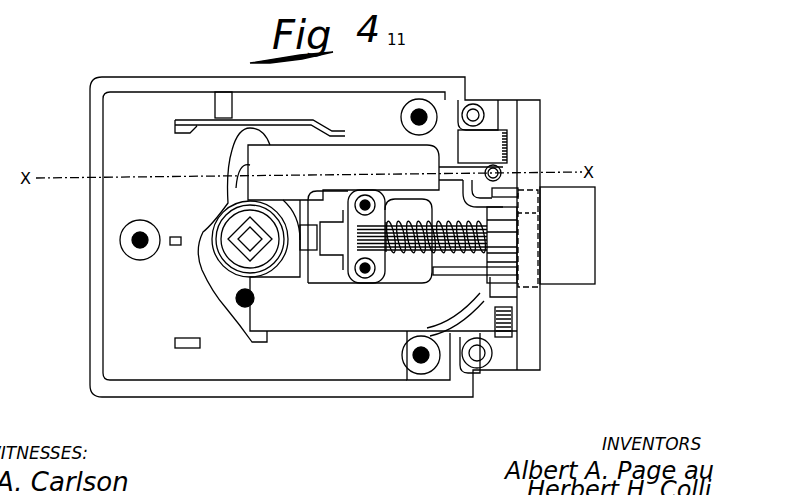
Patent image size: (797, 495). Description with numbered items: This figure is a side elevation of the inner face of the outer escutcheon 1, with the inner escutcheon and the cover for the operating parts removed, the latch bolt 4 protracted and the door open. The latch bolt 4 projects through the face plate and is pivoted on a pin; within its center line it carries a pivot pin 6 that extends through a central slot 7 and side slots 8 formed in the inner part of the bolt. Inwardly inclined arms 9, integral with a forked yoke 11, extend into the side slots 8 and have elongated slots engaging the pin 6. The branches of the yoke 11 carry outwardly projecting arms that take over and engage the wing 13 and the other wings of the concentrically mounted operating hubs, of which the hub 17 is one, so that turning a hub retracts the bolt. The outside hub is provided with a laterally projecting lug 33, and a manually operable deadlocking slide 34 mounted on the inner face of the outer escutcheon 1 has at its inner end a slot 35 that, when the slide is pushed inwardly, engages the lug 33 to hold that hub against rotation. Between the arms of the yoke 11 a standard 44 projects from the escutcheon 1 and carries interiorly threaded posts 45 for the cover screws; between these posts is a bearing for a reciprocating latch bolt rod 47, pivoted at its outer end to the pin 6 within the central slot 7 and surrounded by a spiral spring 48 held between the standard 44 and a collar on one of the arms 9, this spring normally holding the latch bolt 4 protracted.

The outer escutcheon 1 is at (156, 102).
The latch bolt 4 is at (582, 245).
The pivot pin 6 is at (520, 215).
The central slot 7 is at (520, 232).
The side slots 8 is at (520, 190).
The inwardly inclined arms 9 is at (427, 98).
The forked yoke 11 is at (392, 57).
The wing 13 is at (286, 268).
The operating hub 17 is at (228, 250).
The laterally projecting lug 33 is at (307, 227).
The deadlocking slide 34 is at (325, 258).
The slot 35 is at (329, 243).
The standard 44 is at (355, 195).
The interiorly threaded posts 45 is at (381, 253).
The latch bolt stem or rod 47 is at (405, 255).
The spiral spring 48 is at (463, 270).